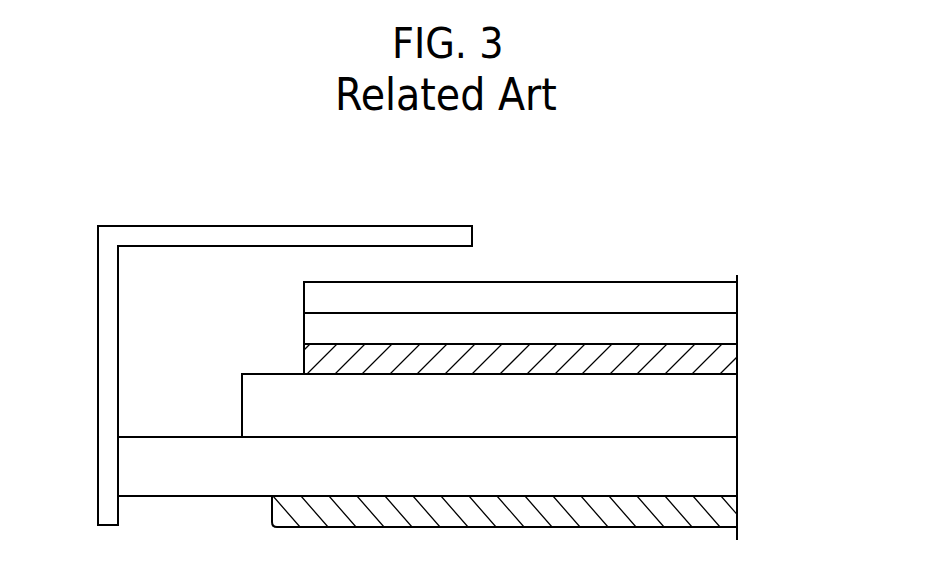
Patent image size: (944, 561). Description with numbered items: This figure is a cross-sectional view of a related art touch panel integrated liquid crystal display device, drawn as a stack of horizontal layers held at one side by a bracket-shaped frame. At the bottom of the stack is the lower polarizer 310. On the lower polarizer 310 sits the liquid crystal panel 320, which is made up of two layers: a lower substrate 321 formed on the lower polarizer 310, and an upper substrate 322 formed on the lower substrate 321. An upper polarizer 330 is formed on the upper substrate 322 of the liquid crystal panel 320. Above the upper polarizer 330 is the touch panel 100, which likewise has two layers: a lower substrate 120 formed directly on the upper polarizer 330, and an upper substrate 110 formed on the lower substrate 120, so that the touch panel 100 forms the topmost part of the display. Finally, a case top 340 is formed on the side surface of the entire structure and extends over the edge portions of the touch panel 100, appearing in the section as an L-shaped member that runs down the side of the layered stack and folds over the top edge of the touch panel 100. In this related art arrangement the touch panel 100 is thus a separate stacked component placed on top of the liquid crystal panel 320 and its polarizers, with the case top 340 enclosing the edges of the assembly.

The touch panel 100 is at (596, 314).
The upper substrate 110 is at (728, 302).
The lower substrate 120 is at (728, 331).
The upper polarizer 330 is at (728, 362).
The liquid crystal panel 320 is at (503, 435).
The upper substrate 322 is at (728, 410).
The lower substrate 321 is at (728, 470).
The lower polarizer 310 is at (728, 517).
The case top 340 is at (106, 403).